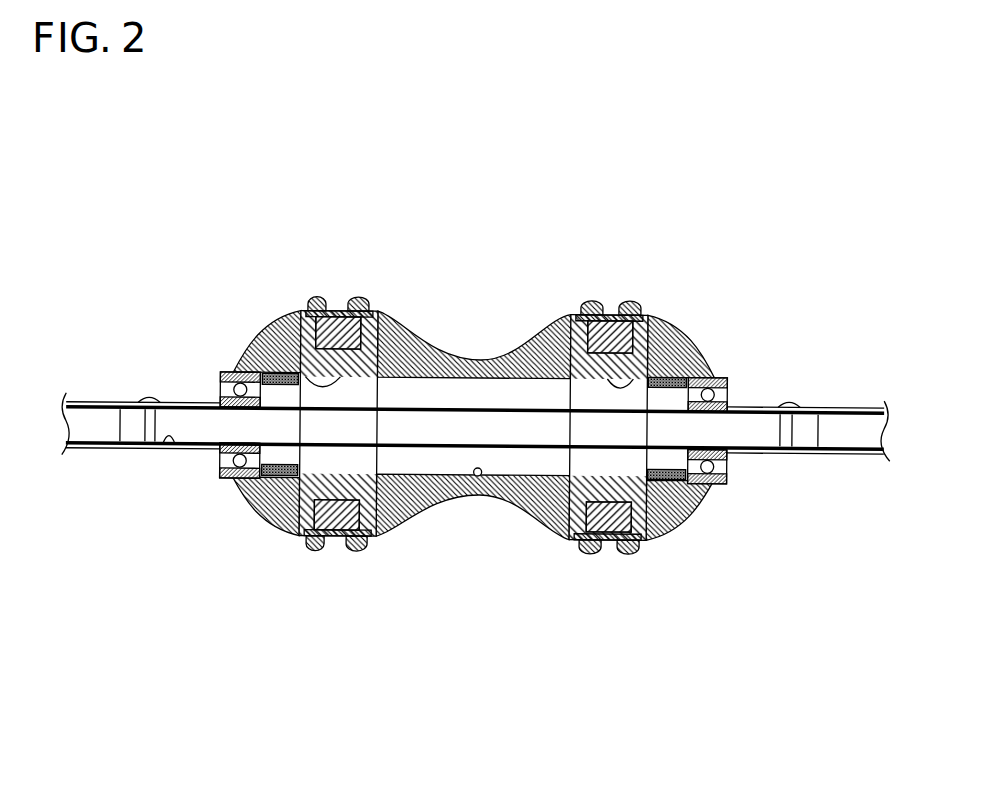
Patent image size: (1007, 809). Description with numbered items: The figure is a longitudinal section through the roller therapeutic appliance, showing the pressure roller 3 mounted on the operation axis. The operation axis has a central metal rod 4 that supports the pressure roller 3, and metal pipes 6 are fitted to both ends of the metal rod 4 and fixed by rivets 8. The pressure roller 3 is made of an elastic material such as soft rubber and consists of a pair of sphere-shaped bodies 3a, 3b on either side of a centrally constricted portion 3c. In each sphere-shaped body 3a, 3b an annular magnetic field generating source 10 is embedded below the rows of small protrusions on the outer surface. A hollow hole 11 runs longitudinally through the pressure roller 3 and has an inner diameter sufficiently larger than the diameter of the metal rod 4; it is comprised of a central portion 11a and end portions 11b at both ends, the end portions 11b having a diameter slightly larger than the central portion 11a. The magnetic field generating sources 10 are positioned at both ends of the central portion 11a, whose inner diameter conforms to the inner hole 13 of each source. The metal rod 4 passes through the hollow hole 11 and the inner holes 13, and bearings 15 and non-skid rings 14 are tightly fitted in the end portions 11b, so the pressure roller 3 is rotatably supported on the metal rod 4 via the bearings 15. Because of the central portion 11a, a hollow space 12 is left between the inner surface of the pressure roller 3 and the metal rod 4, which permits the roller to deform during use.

The pressure roller 3 is at (307, 237).
The sphere-shaped body 3a is at (338, 303).
The sphere-shaped body 3b is at (607, 303).
The centrally constricted portion 3c is at (473, 358).
The metal rod 4 is at (163, 440).
The metal pipe 6 is at (92, 403).
The rivet 8 is at (148, 398).
The annular magnetic field generating source 10 is at (304, 311).
The hollow hole 11 is at (722, 630).
The central portion 11a is at (473, 478).
The end portion 11b is at (283, 536).
The hollow space 12 is at (647, 313).
The inner hole 13 is at (270, 337).
The non-skid ring 14 is at (247, 499).
The bearing 15 is at (215, 369).